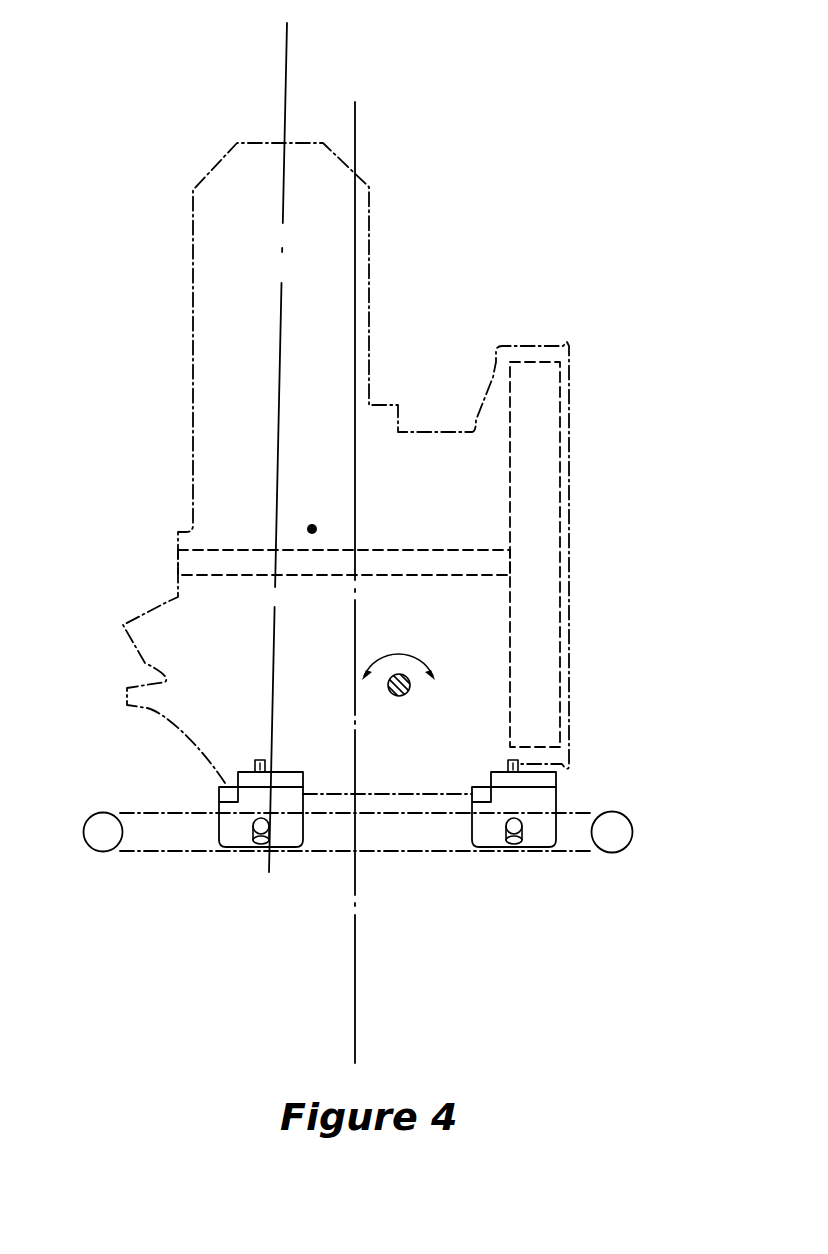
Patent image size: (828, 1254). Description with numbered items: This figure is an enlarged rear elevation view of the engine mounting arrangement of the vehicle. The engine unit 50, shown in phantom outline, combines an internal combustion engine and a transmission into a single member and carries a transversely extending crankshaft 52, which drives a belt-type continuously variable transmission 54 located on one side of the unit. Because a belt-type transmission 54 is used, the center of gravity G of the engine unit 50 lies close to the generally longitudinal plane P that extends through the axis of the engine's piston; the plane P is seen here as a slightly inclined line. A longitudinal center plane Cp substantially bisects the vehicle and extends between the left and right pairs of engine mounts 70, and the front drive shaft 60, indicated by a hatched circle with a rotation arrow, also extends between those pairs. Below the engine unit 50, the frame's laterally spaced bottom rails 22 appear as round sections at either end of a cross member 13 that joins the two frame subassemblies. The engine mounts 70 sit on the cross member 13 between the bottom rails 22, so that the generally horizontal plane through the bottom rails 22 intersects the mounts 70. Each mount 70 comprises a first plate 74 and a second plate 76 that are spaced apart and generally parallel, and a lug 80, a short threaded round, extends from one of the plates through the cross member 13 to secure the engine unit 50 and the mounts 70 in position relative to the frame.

The cross member 13 is at (388, 853).
The bottom rail 22 is at (93, 852).
The engine unit 50 is at (370, 363).
The crankshaft 52 is at (212, 562).
The continuously variable transmission 54 is at (540, 580).
The front drive shaft 60 is at (407, 693).
The engine mount 70 is at (250, 871).
The first plate 74 is at (218, 795).
The second plate 76 is at (543, 800).
The lug 80 is at (252, 828).
The longitudinal plane P is at (287, 96).
The longitudinal center plane Cp is at (355, 145).
The center of gravity G is at (316, 527).